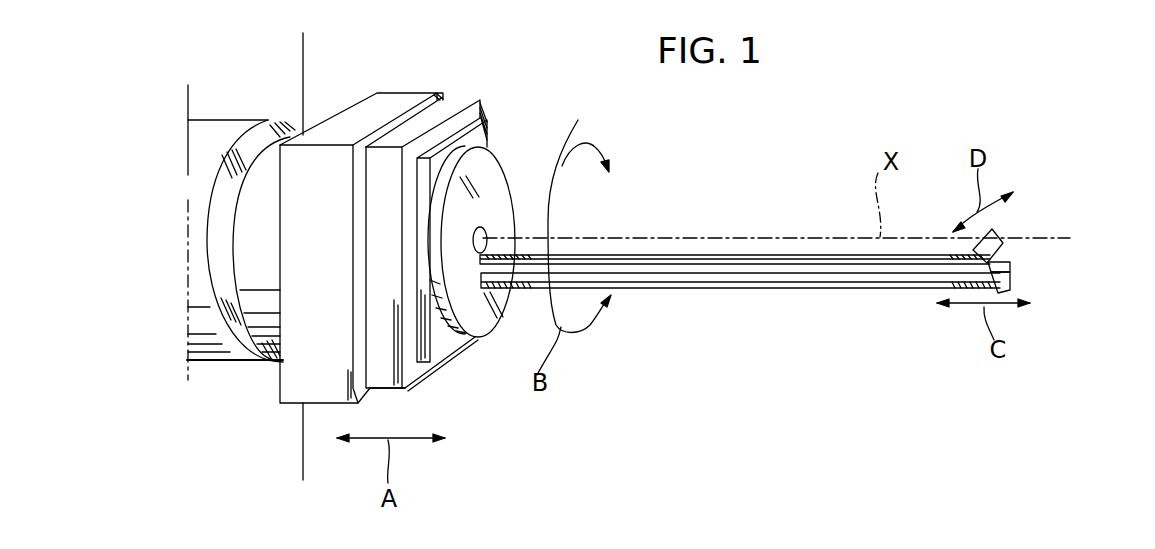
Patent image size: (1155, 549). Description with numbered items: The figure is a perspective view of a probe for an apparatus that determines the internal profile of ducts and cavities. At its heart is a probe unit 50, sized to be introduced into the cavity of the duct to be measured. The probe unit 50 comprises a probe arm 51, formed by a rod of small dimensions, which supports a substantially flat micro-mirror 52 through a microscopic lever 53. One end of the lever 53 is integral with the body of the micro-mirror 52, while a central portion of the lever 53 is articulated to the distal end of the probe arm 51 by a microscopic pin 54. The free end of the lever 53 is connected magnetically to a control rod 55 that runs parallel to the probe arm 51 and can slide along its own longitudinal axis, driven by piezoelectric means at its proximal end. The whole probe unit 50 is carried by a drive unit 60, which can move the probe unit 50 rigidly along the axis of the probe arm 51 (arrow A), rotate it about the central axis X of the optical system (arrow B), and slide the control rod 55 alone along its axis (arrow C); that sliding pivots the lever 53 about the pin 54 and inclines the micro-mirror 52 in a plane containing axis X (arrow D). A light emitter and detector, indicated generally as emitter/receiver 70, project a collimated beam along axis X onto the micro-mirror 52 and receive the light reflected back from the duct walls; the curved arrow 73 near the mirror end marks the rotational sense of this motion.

The probe unit 50 is at (775, 228).
The probe arm 51 is at (697, 256).
The micro-mirror 52 is at (1003, 234).
The lever 53 is at (1012, 288).
The pin 54 is at (1012, 266).
The control rod 55 is at (718, 284).
The drive unit 60 is at (451, 362).
The emitter/receiver 70 is at (480, 234).
The rotation direction arrow 73 is at (585, 138).